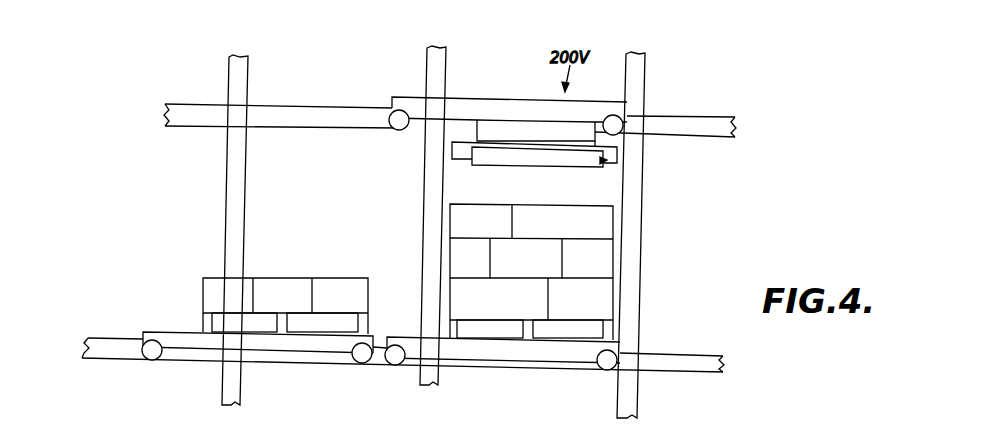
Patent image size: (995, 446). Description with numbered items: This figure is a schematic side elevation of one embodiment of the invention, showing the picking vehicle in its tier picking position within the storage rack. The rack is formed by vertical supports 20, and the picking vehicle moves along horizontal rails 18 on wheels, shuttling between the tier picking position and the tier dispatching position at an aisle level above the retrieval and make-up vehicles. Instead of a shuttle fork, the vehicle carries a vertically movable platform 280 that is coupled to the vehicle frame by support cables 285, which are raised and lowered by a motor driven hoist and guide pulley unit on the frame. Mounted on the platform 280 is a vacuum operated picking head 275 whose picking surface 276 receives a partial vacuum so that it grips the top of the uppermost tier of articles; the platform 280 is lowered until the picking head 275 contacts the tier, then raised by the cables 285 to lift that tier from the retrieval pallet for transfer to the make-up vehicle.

The rails 18 is at (680, 117).
The vertical supports 20 is at (447, 78).
The support cables 285 is at (480, 128).
The vertically movable platform 280 is at (618, 155).
The picking surface 276 is at (513, 160).
The vacuum operated picking head 275 is at (608, 163).